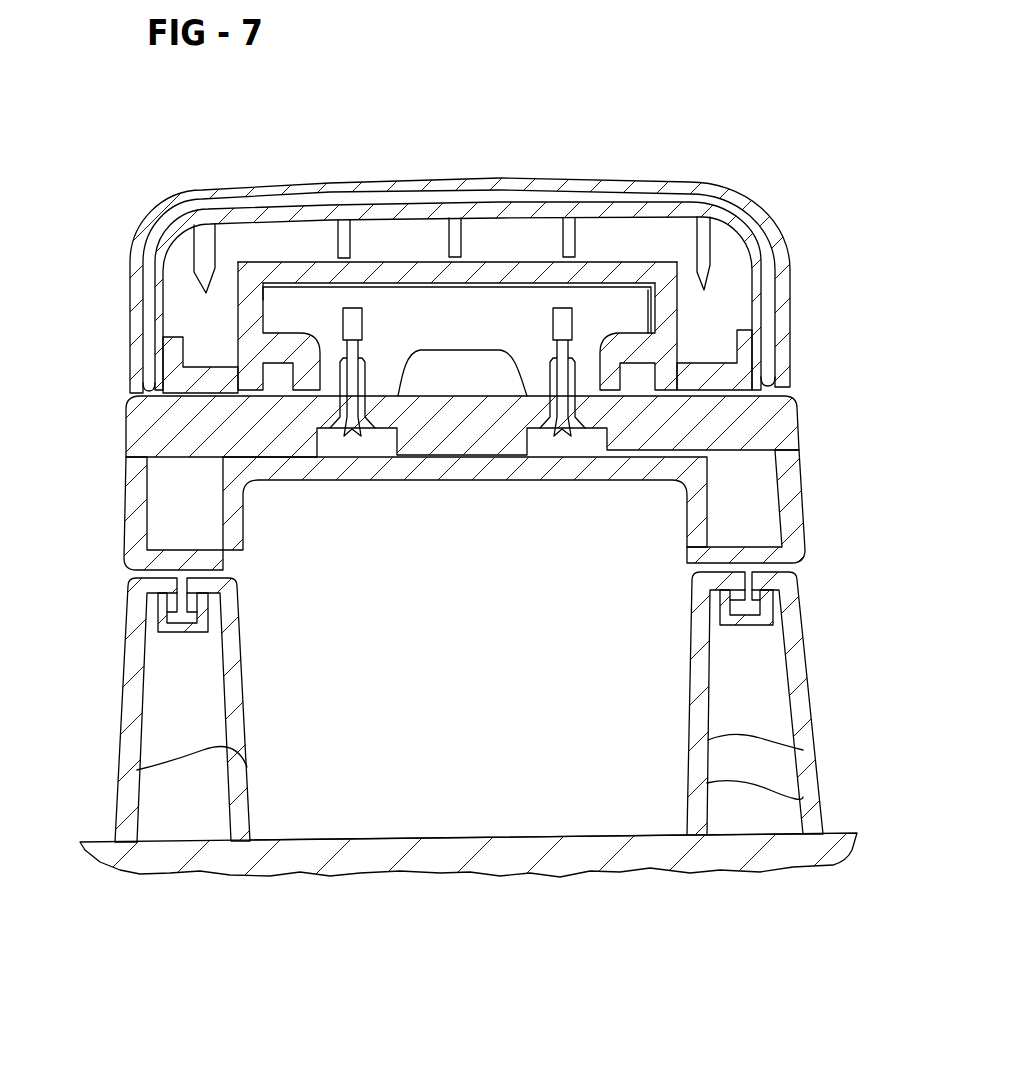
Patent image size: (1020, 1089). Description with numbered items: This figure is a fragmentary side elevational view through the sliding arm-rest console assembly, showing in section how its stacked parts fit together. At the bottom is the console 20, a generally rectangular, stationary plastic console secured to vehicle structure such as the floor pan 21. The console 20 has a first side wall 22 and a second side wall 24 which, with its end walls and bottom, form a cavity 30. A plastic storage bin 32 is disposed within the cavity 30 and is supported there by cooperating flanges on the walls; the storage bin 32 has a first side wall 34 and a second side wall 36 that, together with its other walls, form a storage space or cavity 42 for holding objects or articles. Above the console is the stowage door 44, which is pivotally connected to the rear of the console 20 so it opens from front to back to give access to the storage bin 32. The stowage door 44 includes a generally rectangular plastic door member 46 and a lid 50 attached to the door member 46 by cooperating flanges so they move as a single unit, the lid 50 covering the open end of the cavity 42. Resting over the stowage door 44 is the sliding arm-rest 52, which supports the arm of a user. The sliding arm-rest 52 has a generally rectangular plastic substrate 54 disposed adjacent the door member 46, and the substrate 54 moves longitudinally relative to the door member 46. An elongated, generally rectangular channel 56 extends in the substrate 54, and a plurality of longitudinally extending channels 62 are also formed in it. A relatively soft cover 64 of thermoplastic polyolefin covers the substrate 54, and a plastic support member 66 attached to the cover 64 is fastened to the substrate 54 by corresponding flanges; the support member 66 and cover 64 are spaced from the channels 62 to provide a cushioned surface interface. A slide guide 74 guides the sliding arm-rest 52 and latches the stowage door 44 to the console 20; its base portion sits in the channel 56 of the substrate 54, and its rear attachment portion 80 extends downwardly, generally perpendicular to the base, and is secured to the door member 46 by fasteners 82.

The console 20 is at (454, 762).
The floor pan 21 is at (510, 857).
The first side wall 22 is at (128, 703).
The second side wall 24 is at (793, 657).
The cavity 30 is at (743, 807).
The storage bin 32 is at (803, 750).
The first side wall 34 is at (137, 770).
The second side wall 36 is at (803, 797).
The storage space or cavity 42 is at (367, 797).
The stowage door 44 is at (439, 441).
The door member 46 is at (770, 425).
The lid 50 is at (709, 495).
The sliding arm-rest 52 is at (503, 243).
The substrate 54 is at (700, 307).
The channel 56 is at (640, 265).
The channels 62 is at (412, 218).
The cover 64 is at (158, 197).
The support member 66 is at (270, 215).
The slide guide 74 is at (472, 325).
The rear attachment portion 80 is at (508, 280).
The fasteners 82 is at (360, 435).